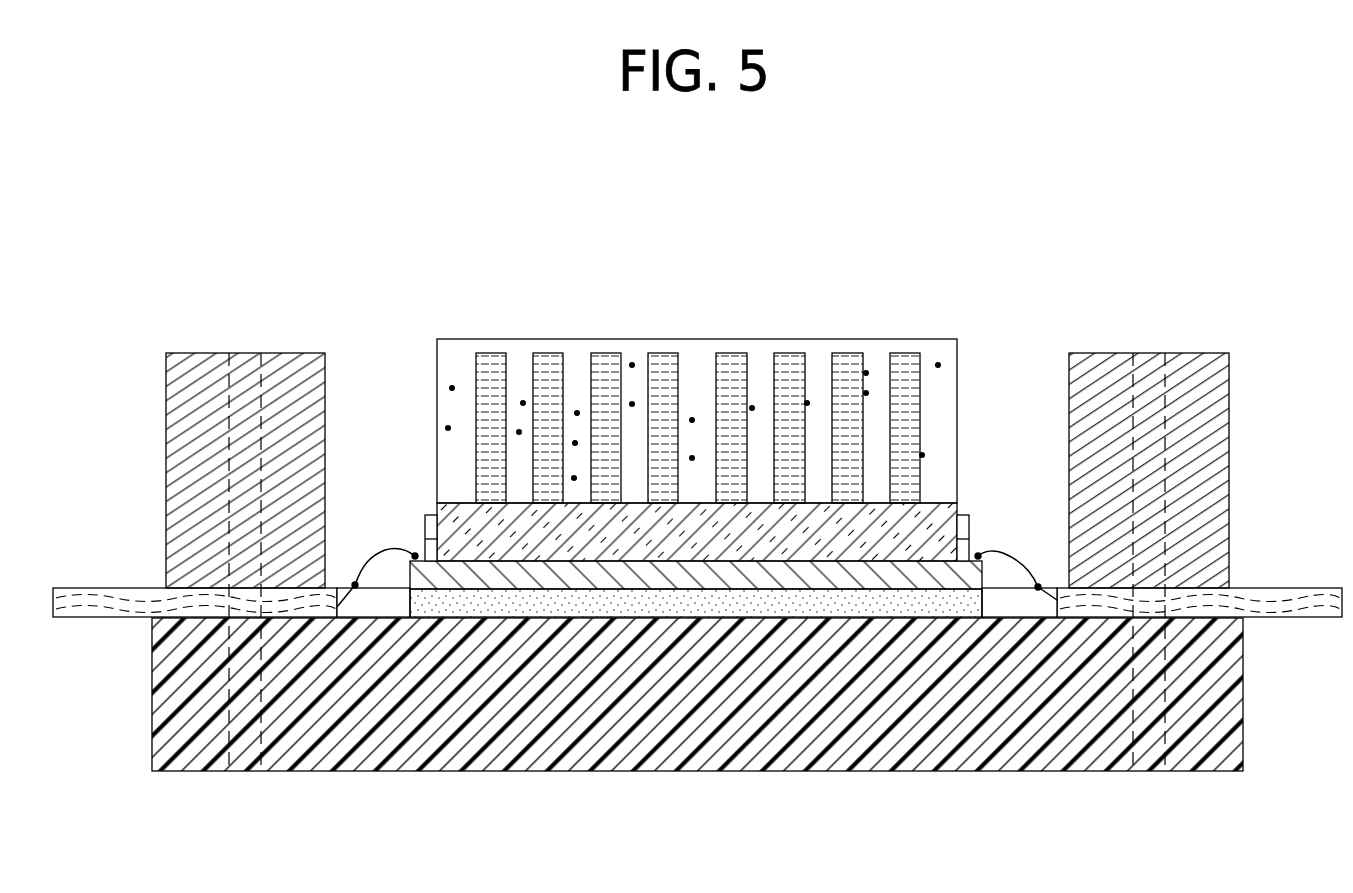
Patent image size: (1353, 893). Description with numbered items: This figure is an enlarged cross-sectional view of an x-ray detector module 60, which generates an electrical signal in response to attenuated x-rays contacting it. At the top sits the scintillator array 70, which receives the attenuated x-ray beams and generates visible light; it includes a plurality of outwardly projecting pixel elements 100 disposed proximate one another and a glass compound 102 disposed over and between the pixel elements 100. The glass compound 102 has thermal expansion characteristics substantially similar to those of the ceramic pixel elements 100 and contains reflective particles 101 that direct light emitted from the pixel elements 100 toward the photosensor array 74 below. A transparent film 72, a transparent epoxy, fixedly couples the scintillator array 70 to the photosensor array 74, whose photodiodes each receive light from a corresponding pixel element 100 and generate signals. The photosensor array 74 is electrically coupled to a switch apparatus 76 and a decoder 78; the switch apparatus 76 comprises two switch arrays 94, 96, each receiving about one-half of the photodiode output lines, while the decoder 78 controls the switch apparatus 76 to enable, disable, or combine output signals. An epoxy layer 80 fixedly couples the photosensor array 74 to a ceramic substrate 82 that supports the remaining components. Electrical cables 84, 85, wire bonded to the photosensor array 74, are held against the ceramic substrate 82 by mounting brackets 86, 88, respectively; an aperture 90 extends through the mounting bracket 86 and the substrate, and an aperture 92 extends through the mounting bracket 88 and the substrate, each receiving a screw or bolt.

The detector module 60 is at (782, 238).
The scintillator array 70 is at (893, 340).
The transparent film 72 is at (460, 517).
The photosensor array 74 is at (410, 573).
The switch apparatus 76 is at (421, 544).
The decoder 78 is at (965, 515).
The epoxy layer 80 is at (982, 606).
The ceramic substrate 82 is at (1243, 705).
The electrical cable 84 is at (82, 588).
The electrical cable 85 is at (1325, 588).
The mounting bracket 86 is at (166, 393).
The mounting bracket 88 is at (1230, 445).
The aperture 90 is at (240, 775).
The aperture 92 is at (1147, 775).
The switch array 94 is at (983, 552).
The switch array 96 is at (410, 550).
The pixel elements 100 is at (603, 353).
The reflective particles 101 is at (733, 347).
The glass compound 102 is at (945, 395).